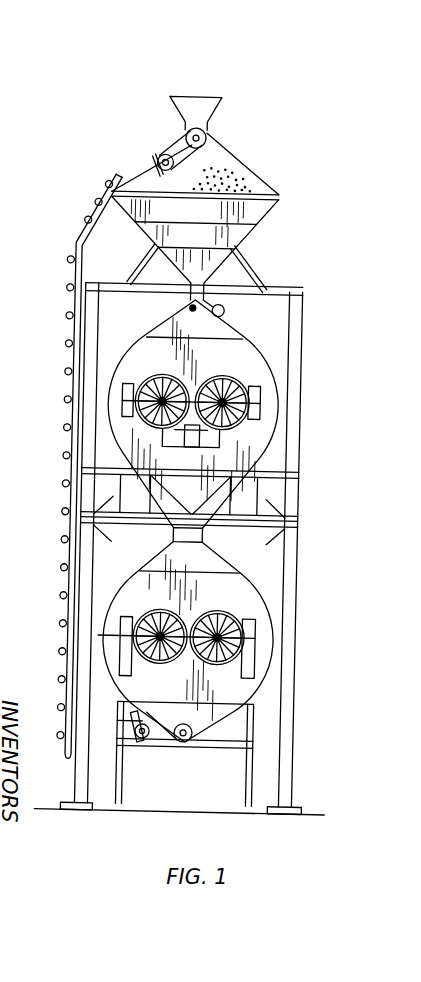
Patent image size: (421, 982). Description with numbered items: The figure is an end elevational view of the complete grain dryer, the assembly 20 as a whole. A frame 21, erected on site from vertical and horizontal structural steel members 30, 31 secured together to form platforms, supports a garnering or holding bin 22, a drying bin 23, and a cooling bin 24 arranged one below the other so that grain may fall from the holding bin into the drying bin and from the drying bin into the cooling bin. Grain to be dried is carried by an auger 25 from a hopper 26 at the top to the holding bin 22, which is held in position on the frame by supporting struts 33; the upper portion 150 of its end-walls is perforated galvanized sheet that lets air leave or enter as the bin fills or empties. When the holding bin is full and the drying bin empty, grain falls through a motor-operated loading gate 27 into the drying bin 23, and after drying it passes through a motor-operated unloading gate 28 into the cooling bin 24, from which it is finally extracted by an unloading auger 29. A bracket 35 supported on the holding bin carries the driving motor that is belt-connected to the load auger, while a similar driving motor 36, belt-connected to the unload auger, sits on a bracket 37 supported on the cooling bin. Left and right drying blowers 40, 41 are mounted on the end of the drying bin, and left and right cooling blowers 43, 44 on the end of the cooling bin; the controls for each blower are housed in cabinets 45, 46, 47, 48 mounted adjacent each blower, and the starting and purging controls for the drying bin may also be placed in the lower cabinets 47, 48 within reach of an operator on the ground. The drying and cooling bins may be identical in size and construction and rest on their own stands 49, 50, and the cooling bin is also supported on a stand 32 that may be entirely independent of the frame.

The assembly 20 is at (306, 446).
The frame 21 is at (293, 317).
The holding bin 22 is at (255, 202).
The drying bin 23 is at (262, 392).
The cooling bin 24 is at (263, 615).
The auger 25 is at (199, 133).
The hopper 26 is at (176, 93).
The loading gate 27 is at (175, 301).
The unloading gate 28 is at (166, 535).
The unloading auger 29 is at (189, 745).
The vertical structural steel members 30 is at (298, 546).
The horizontal structural steel members 31 is at (264, 280).
The stand 32 is at (253, 768).
The supporting struts 33 is at (253, 259).
The bracket 35 is at (139, 165).
The driving motor 36 is at (144, 730).
The bracket 37 is at (144, 745).
The left drying blower 40 is at (136, 372).
The right drying blower 41 is at (258, 364).
The left cooling blower 43 is at (148, 607).
The right cooling blower 44 is at (228, 613).
The cabinet 45 is at (117, 400).
The cabinet 46 is at (267, 412).
The cabinet 47 is at (122, 622).
The cabinet 48 is at (260, 632).
The stand 49 is at (298, 483).
The stand 50 is at (259, 722).
The upper portion 150 is at (239, 178).